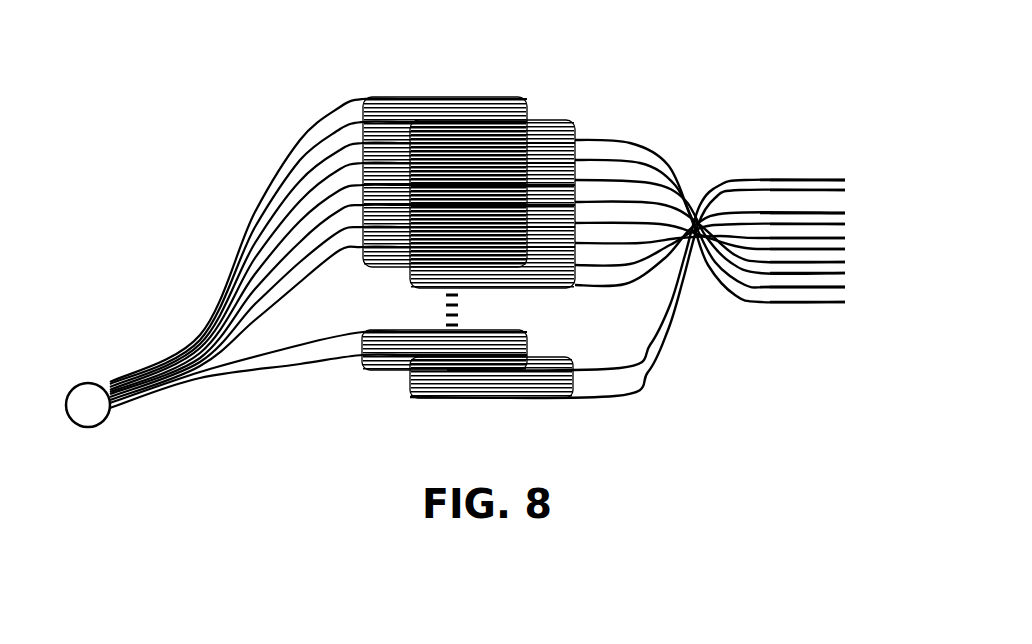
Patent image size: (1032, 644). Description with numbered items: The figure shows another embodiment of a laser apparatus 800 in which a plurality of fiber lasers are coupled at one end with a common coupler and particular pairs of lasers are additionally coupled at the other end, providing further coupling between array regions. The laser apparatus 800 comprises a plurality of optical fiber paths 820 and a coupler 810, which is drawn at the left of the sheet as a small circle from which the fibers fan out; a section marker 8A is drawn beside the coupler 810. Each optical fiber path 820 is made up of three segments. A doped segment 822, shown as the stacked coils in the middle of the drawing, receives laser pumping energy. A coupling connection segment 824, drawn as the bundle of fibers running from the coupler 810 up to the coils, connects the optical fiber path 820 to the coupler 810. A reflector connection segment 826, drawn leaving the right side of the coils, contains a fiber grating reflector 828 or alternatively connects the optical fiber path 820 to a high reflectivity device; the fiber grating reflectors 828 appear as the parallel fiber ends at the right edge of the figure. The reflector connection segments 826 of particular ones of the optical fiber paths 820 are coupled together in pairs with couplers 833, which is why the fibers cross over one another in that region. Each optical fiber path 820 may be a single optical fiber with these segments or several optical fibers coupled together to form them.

The laser apparatus 800 is at (414, 19).
The coupler 810 is at (104, 372).
The cross-section view reference 8A is at (103, 423).
The optical fiber path 820 is at (497, 214).
The doped segment 822 is at (470, 80).
The coupling connection segment 824 is at (238, 201).
The reflector connection segment 826 is at (672, 130).
The fiber grating reflector 828 is at (806, 168).
The couplers 833 is at (757, 180).